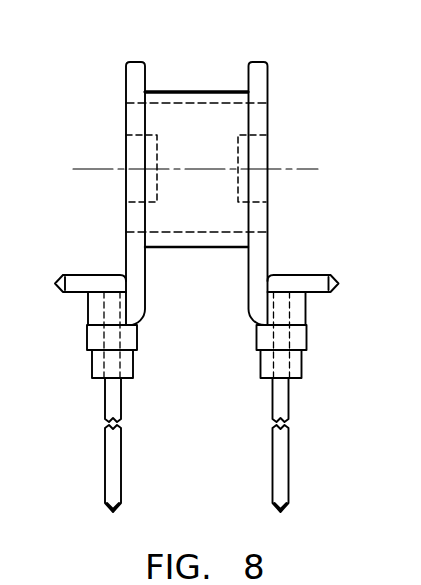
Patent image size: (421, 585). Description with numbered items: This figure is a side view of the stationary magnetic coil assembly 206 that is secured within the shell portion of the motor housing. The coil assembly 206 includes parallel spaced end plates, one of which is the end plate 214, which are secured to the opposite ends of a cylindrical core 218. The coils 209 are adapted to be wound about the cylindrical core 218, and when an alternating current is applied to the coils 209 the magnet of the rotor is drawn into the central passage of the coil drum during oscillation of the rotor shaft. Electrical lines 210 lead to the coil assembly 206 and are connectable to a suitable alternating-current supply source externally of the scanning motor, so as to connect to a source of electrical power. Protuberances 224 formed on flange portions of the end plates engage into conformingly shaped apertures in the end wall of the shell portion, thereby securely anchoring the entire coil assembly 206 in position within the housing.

The stationary coil assembly 206 is at (204, 269).
The coils 209 is at (190, 248).
The electrical lines 210 is at (123, 455).
The end plate 214 is at (125, 97).
The cylindrical core 218 is at (213, 91).
The protuberances 224 is at (92, 378).